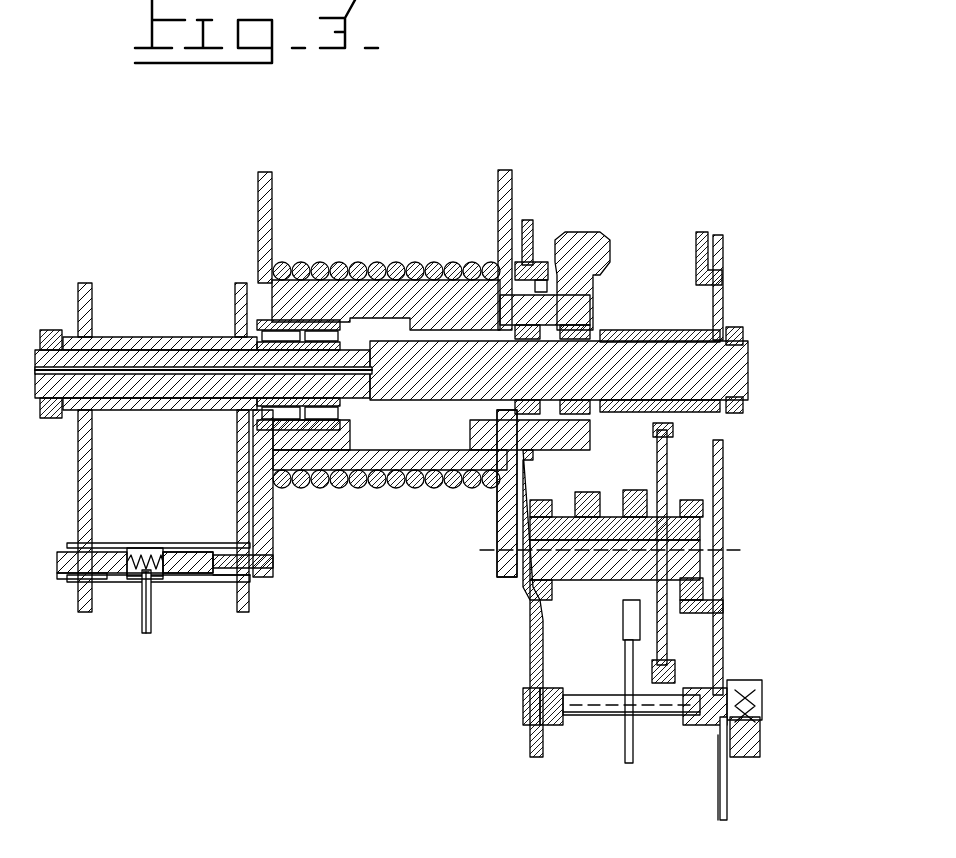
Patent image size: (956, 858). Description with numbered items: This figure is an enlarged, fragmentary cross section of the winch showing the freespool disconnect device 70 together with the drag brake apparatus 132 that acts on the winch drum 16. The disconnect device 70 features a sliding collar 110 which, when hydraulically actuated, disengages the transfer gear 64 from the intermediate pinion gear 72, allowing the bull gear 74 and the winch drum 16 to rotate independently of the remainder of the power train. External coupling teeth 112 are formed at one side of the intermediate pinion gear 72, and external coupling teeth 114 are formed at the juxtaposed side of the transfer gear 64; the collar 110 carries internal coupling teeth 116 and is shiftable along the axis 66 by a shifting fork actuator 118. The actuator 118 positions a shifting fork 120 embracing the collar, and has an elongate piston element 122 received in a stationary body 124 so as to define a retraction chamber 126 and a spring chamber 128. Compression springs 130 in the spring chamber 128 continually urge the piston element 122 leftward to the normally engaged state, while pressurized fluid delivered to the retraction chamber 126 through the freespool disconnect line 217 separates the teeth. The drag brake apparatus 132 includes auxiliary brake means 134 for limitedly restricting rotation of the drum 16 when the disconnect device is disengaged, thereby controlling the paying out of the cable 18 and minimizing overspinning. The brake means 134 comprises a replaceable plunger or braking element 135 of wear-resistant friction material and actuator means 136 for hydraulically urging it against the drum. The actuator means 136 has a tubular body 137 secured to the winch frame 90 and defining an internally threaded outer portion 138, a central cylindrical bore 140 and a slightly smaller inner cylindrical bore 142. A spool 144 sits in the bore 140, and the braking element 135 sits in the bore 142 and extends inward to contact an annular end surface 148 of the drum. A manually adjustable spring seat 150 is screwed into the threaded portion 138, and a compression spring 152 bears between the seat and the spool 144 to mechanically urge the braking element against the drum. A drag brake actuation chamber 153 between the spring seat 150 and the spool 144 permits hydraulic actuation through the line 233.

The winch drum 16 is at (418, 462).
The cable 18 is at (315, 262).
The transfer gear 64 is at (673, 433).
The axis 66 is at (730, 560).
The freespool disconnect device 70 is at (629, 458).
The intermediate pinion gear 72 is at (600, 600).
The bull gear 74 is at (578, 240).
The winch frame 90 is at (92, 307).
The sliding collar 110 is at (662, 470).
The external coupling teeth 112 is at (560, 548).
The external coupling teeth 114 is at (660, 540).
The internal coupling teeth 116 is at (650, 502).
The shifting fork actuator 118 is at (522, 708).
The shifting fork 120 is at (632, 620).
The piston element 122 is at (665, 725).
The stationary body 124 is at (735, 760).
The retraction chamber 126 is at (705, 730).
The spring chamber 128 is at (733, 680).
The compression springs 130 is at (760, 740).
The winch drag brake apparatus 132 is at (148, 262).
The auxiliary brake means 134 is at (145, 645).
The braking element 135 is at (262, 558).
The actuator means 136 is at (178, 538).
The tubular body 137 is at (176, 545).
The internally threaded outer portion 138 is at (70, 550).
The central cylindrical bore 140 is at (188, 550).
The inner cylindrical bore 142 is at (227, 583).
The spool 144 is at (165, 548).
The annular end surface 148 is at (258, 178).
The spring seat 150 is at (67, 575).
The compression spring 152 is at (136, 582).
The drag brake actuation chamber 153 is at (158, 580).
The freespool disconnect line 217 is at (716, 795).
The line 233 is at (150, 615).